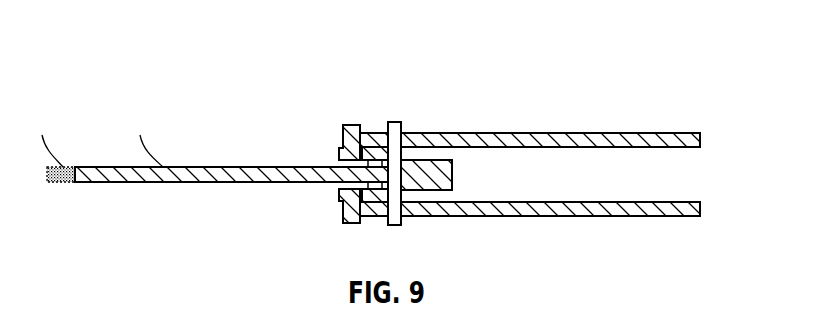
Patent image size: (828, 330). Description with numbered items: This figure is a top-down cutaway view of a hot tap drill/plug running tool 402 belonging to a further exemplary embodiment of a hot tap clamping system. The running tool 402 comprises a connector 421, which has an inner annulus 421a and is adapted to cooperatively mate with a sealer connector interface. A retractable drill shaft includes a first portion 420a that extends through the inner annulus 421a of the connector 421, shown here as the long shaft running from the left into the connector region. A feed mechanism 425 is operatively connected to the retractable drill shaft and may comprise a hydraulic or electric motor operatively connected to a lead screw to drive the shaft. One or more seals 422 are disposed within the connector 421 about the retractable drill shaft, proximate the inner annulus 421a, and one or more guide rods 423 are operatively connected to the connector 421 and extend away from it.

The hot tap drill/plug running tool 402 is at (229, 110).
The first portion of retractable drill shaft 420a is at (225, 203).
The connector 421 is at (355, 133).
The inner annulus 421a is at (363, 132).
The seals 422 is at (402, 130).
The guide rods 423 is at (627, 208).
The feed mechanism 425 is at (445, 163).